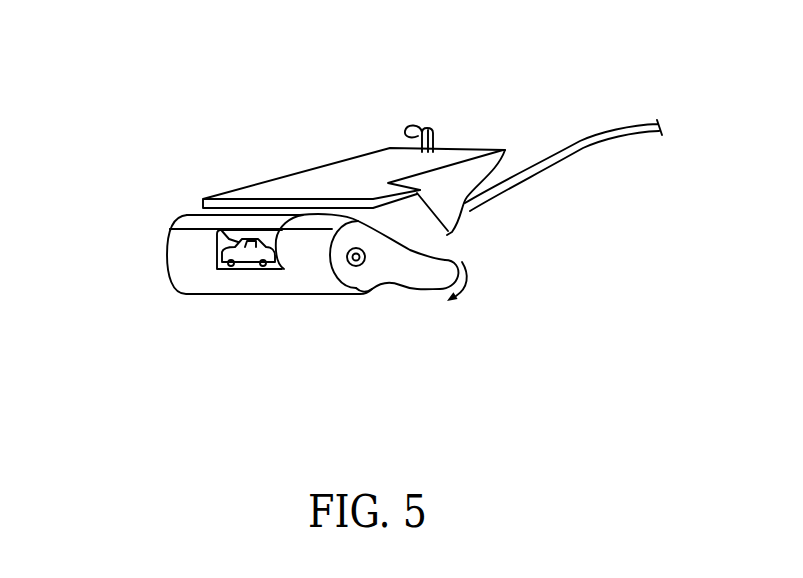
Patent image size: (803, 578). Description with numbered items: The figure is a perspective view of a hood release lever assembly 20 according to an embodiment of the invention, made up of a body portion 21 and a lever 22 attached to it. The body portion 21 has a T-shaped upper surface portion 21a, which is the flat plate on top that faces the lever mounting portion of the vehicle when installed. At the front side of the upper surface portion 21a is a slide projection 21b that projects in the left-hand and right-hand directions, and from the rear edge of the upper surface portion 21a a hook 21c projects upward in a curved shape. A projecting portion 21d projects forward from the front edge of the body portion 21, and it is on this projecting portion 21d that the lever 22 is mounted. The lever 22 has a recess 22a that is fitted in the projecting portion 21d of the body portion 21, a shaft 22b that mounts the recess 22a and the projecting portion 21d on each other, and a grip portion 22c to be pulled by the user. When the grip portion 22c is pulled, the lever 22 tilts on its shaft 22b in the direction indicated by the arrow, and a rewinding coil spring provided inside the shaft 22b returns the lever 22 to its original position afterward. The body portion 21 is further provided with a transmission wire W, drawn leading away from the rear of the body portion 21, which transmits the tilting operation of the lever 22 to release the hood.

The pickup/sensor assembly 20 is at (173, 196).
The body portion 21 is at (468, 207).
The T-shaped upper surface portion 21a is at (348, 172).
The slide projection 21b is at (247, 187).
The hook 21c is at (417, 130).
The projecting portion 21d is at (215, 258).
The lever 22 is at (309, 274).
The recess 22a is at (264, 273).
The shaft 22b is at (358, 266).
The grip portion 22c is at (430, 283).
The transmission wire W is at (621, 141).